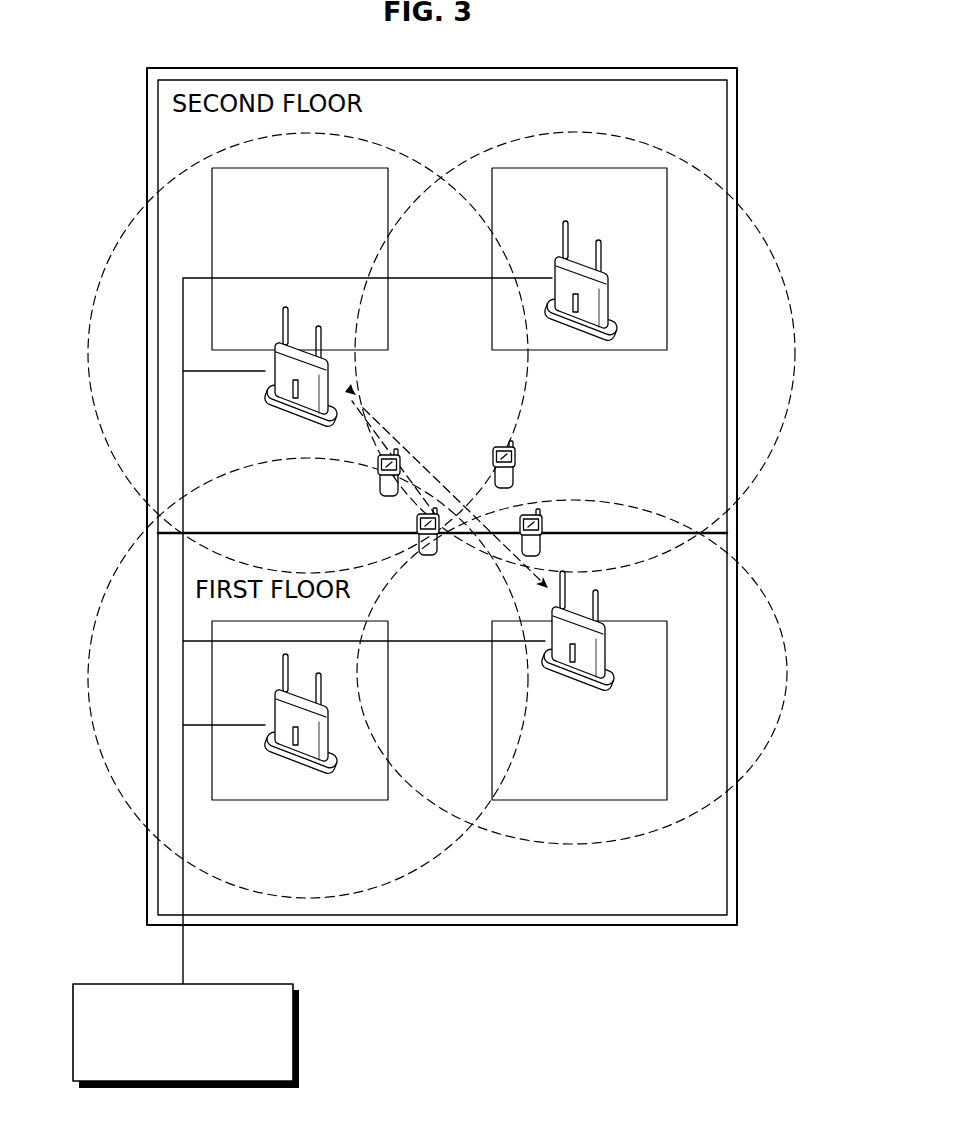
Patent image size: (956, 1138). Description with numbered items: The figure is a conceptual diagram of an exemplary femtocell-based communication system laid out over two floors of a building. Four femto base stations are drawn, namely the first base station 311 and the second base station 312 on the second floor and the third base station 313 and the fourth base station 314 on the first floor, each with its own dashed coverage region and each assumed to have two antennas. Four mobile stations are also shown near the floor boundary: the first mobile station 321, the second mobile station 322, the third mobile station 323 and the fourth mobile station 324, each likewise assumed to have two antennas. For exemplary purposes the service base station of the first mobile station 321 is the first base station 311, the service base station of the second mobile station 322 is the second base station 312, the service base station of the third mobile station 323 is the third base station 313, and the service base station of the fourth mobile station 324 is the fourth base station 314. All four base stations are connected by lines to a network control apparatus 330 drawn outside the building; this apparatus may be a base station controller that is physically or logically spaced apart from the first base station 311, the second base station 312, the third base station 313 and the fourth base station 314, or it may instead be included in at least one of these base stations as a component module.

The BS (1) 311 is at (333, 387).
The BS (2) 312 is at (612, 298).
The BS (3) 313 is at (333, 731).
The BS (4) 314 is at (608, 643).
The MS (1) 321 is at (378, 482).
The MS (2) 322 is at (513, 444).
The MS (3) 323 is at (415, 541).
The MS (4) 324 is at (542, 516).
The network control apparatus 330 is at (298, 1034).